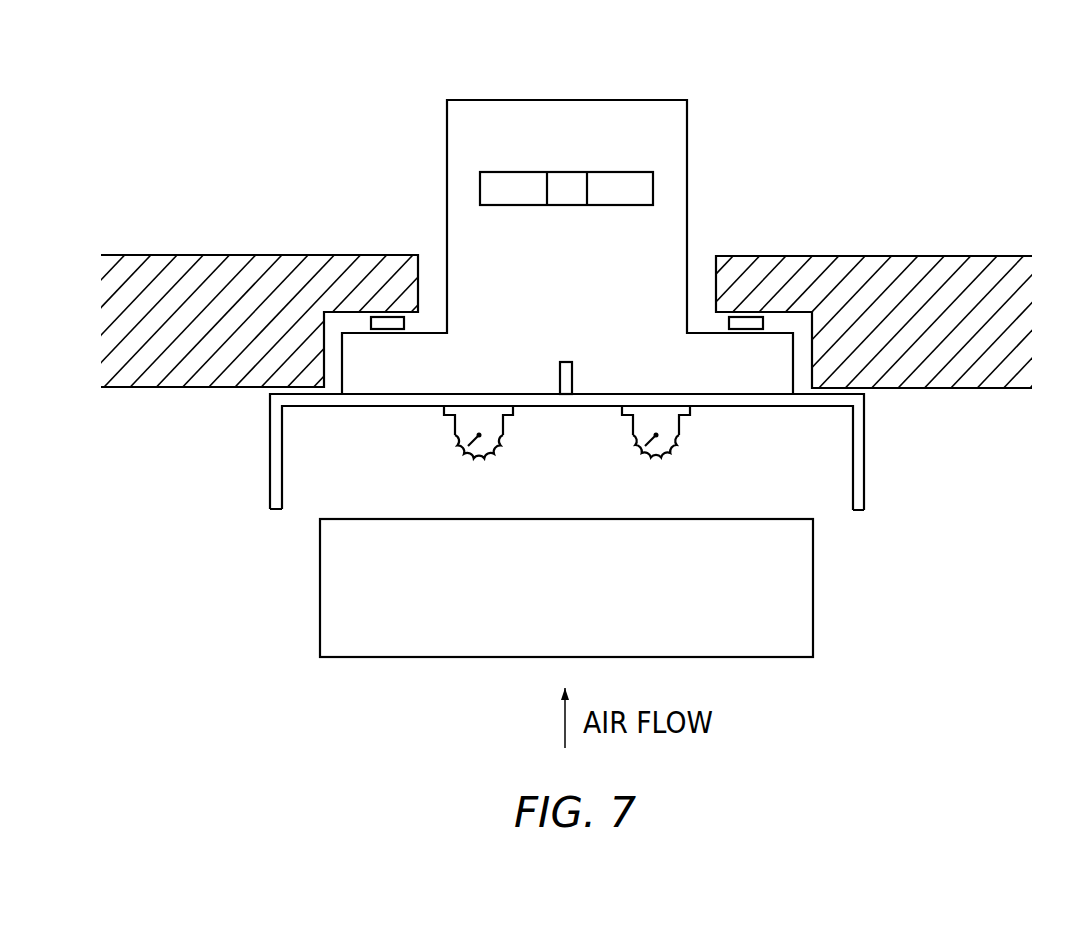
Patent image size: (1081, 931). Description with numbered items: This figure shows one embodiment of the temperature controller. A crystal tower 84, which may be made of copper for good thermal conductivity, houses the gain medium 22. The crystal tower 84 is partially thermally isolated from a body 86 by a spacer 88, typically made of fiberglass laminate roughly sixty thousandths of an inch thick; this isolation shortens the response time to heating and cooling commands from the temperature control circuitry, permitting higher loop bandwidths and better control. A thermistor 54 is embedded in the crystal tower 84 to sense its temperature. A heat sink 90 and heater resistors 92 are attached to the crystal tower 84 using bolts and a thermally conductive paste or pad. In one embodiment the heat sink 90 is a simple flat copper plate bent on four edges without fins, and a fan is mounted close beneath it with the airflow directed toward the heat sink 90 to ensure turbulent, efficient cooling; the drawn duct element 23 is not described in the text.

The gain medium 22 is at (574, 178).
The air duct 23 is at (812, 664).
The thermistor 54 is at (556, 356).
The crystal tower 84 is at (691, 157).
The body 86 is at (248, 240).
The spacer 88 is at (749, 316).
The heat sink 90 is at (868, 494).
The heater resistors 92 is at (684, 430).